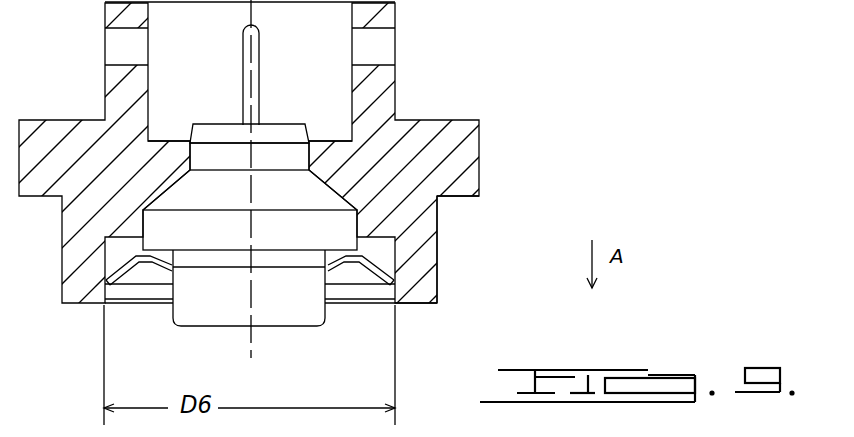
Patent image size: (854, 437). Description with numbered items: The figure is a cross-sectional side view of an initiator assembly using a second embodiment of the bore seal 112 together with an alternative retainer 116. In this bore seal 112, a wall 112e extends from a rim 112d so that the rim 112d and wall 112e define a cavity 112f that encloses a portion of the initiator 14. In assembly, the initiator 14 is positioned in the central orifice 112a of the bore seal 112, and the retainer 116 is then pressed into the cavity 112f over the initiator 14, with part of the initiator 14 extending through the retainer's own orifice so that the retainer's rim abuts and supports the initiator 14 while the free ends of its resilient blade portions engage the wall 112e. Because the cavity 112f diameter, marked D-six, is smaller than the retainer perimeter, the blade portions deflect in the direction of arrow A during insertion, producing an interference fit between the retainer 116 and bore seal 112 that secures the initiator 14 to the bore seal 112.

The bore seal 112 is at (447, 117).
The central orifice 112a is at (173, 184).
The rim 112d is at (418, 208).
The wall 112e is at (417, 277).
The cavity 112f is at (362, 292).
The retainer 116 is at (133, 277).
The initiator 14 is at (283, 327).